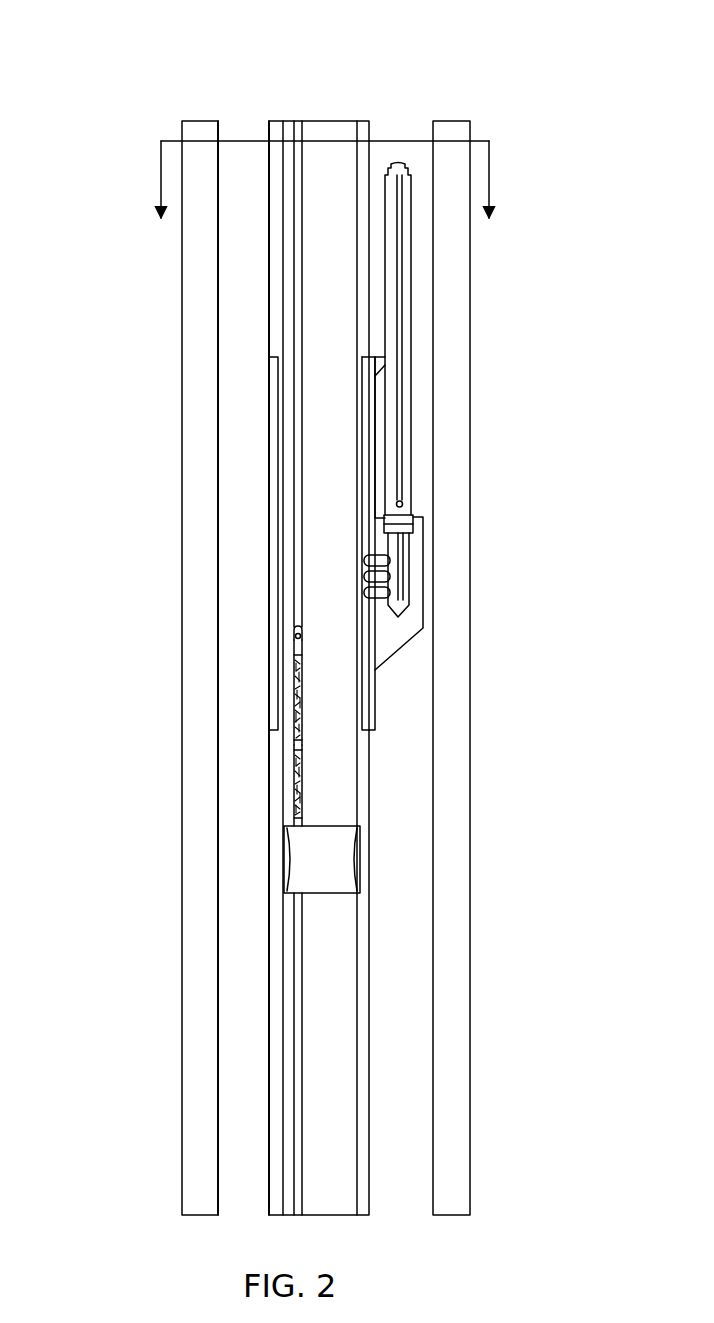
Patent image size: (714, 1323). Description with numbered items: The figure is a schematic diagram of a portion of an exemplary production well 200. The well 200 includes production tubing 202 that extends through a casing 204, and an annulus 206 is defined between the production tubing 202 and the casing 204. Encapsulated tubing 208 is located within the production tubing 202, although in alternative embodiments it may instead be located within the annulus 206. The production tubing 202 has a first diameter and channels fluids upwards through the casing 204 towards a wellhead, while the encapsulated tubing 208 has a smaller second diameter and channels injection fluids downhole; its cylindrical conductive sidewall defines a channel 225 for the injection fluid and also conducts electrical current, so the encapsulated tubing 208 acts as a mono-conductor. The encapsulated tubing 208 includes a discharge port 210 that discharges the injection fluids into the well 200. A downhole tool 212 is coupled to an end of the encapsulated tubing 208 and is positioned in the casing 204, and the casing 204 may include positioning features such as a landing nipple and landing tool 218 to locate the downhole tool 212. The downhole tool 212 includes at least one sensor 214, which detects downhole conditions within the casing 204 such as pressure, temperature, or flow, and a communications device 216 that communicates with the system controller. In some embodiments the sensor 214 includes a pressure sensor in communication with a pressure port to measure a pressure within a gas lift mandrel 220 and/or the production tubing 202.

The well 200 is at (534, 56).
The production tubing 202 is at (365, 810).
The casing 204 is at (182, 716).
The annulus 206 is at (232, 964).
The encapsulated tubing 208 is at (292, 440).
The discharge port 210 is at (304, 634).
The downhole tool 212 is at (238, 628).
The sensor 214 is at (296, 802).
The communications device 216 is at (304, 690).
The landing tool 218 is at (362, 880).
The gas lift mandrel 220 is at (413, 448).
The channel 225 is at (292, 379).